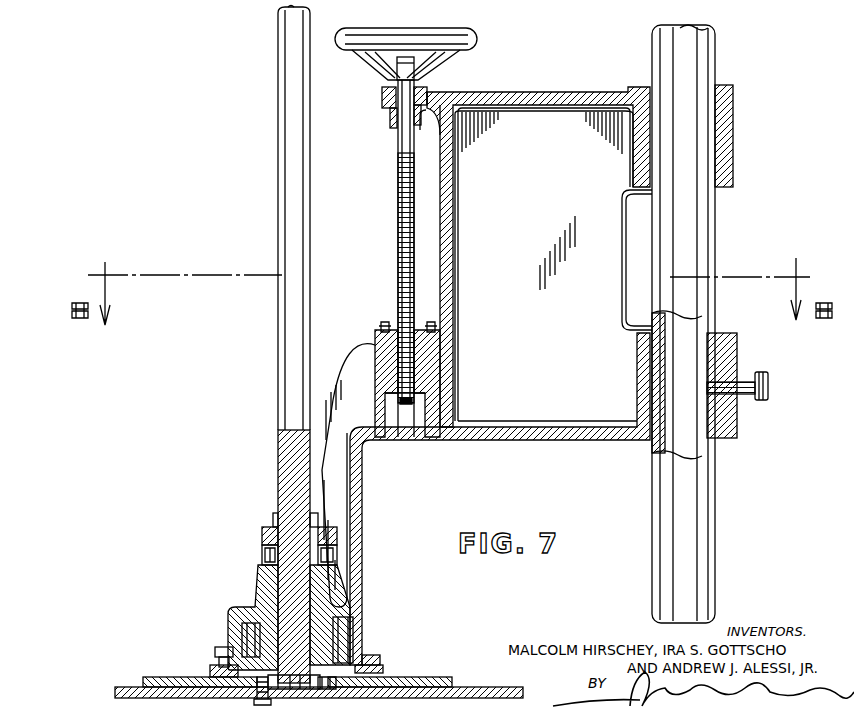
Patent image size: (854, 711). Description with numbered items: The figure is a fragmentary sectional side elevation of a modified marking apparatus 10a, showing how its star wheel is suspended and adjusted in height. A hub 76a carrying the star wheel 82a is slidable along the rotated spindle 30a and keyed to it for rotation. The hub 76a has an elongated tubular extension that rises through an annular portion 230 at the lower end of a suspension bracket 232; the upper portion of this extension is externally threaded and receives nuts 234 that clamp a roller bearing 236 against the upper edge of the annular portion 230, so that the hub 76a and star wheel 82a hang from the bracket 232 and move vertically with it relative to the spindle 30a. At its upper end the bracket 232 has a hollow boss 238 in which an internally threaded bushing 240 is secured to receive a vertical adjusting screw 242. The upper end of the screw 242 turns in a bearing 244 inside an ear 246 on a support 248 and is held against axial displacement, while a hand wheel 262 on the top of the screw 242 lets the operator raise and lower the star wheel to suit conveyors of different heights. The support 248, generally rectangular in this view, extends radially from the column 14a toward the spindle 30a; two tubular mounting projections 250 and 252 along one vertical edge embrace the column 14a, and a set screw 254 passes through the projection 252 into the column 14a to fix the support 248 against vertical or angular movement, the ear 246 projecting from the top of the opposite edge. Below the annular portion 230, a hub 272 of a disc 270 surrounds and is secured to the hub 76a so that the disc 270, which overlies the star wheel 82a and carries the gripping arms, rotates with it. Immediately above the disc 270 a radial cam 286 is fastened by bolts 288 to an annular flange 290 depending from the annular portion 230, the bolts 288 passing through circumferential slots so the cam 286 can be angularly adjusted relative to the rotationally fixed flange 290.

The marking apparatus 10a is at (166, 121).
The column 14a is at (700, 55).
The spindle 30a is at (302, 173).
The hub 76a is at (272, 633).
The star wheel 82a is at (138, 683).
The annular portion 230 is at (258, 586).
The suspension bracket 232 is at (362, 500).
The nuts 234 is at (262, 533).
The roller bearing 236 is at (262, 554).
The hollow boss 238 is at (380, 345).
The internally threaded bushing 240 is at (420, 366).
The vertical adjusting screw 242 is at (397, 258).
The bearing 244 is at (436, 100).
The ear 246 is at (382, 105).
The support 248 is at (527, 92).
The tubular mounting projection 250 is at (725, 90).
The tubular mounting projection 252 is at (737, 348).
The set screw 254 is at (756, 395).
The hand wheel 262 is at (475, 37).
The disc 270 is at (452, 681).
The hub 272 is at (340, 630).
The radial cam 286 is at (383, 668).
The bolts 288 is at (215, 649).
The annular flange 290 is at (378, 657).